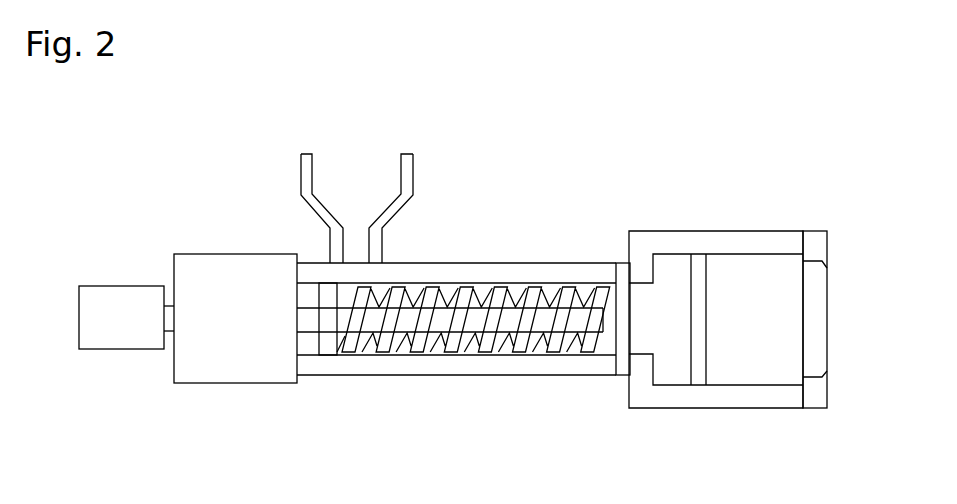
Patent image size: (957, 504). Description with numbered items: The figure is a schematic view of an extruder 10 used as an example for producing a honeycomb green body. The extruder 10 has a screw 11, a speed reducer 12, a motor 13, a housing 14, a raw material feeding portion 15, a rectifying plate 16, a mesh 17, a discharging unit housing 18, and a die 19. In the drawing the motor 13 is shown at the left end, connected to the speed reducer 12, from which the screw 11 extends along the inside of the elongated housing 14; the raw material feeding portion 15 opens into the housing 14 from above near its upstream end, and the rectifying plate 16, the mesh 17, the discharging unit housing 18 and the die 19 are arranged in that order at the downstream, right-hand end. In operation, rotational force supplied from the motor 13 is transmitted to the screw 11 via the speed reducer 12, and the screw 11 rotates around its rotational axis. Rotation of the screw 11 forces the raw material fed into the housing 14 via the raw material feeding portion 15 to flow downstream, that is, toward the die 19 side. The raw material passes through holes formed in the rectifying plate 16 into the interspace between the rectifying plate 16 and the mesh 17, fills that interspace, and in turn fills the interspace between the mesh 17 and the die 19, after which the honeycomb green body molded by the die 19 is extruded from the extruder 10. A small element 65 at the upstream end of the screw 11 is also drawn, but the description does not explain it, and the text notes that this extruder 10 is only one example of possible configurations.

The extruder 10 is at (62, 133).
The screw 11 is at (504, 342).
The speed reducer 12 is at (220, 356).
The motor 13 is at (129, 331).
The housing 14 is at (437, 265).
The raw material feeding portion 15 is at (308, 152).
The rectifying plate 16 is at (630, 274).
The mesh 17 is at (703, 266).
The discharging unit housing 18 is at (789, 249).
The die 19 is at (820, 237).
The thrust plate 65 is at (324, 345).